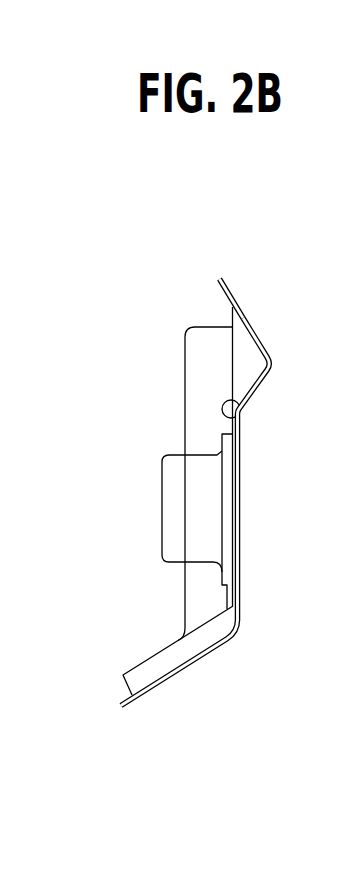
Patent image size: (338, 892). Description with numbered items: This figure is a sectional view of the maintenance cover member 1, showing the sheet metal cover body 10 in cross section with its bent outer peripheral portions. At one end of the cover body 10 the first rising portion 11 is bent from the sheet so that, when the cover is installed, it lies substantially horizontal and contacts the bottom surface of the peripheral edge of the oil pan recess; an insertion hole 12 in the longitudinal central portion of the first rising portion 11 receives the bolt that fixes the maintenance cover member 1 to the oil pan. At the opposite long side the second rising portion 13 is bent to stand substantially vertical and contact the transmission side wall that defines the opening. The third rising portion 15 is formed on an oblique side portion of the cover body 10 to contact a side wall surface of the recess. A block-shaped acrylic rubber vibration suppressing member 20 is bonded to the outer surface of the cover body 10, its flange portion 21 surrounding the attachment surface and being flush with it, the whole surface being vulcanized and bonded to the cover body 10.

The maintenance cover member 1 is at (158, 285).
The cover body 10 is at (242, 404).
The first rising portion 11 is at (223, 278).
The insertion hole 12 is at (247, 308).
The second rising portion 13 is at (190, 670).
The third rising portion 15 is at (185, 377).
The vibration suppressing member 20 is at (177, 507).
The flange portion 21 is at (228, 510).